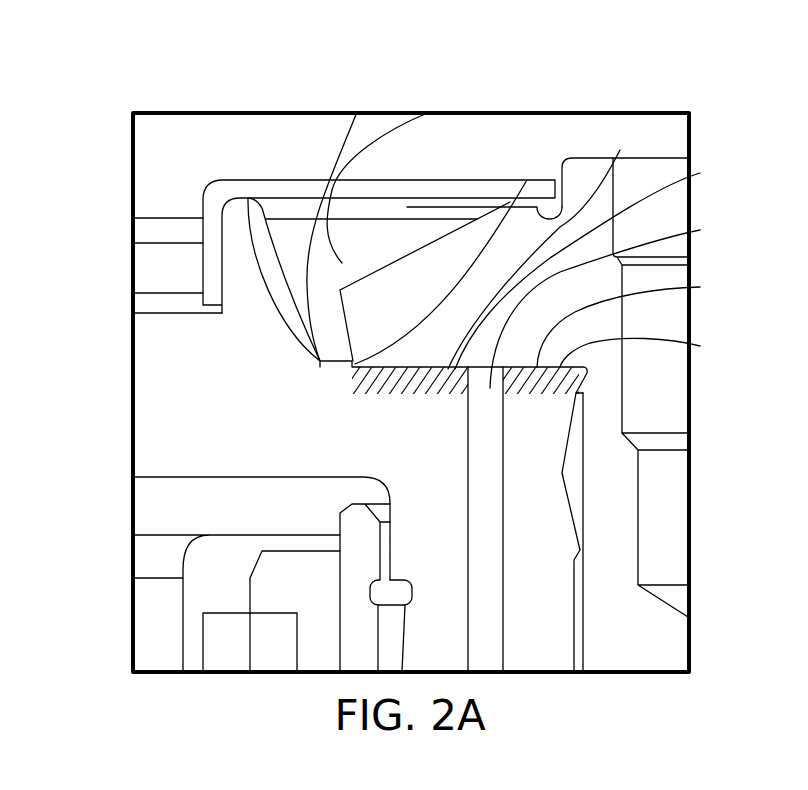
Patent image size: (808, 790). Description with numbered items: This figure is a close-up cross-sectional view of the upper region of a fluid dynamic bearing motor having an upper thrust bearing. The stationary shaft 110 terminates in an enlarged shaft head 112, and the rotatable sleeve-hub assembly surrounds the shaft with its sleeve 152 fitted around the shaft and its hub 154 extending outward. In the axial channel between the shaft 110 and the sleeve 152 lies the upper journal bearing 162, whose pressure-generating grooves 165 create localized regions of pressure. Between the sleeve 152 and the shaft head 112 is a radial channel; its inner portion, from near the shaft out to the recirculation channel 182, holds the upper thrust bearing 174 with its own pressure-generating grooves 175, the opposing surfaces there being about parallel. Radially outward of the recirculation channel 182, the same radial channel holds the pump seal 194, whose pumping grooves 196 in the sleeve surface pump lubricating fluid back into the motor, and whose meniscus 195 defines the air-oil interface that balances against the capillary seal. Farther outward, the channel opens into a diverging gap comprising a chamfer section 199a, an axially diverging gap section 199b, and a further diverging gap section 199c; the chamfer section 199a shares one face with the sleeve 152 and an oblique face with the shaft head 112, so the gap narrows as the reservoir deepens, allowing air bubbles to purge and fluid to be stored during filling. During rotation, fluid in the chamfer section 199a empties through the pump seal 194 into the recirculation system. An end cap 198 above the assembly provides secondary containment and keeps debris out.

The shaft 110 is at (657, 661).
The shaft head 112 is at (410, 318).
The sleeve 152 is at (413, 661).
The hub 154 is at (152, 406).
The upper journal bearing 162 is at (583, 437).
The pressure-generating grooves 165 is at (562, 473).
The upper thrust bearing 174 is at (700, 287).
The pressure-generating grooves 175 is at (700, 346).
The recirculation channel 182 is at (700, 230).
The pump seal 194 is at (620, 150).
The meniscus 195 is at (527, 180).
The pumping grooves 196 is at (700, 173).
The end cap 198 is at (222, 198).
The chamfer section 199a is at (248, 198).
The diverging gap section 199b is at (357, 112).
The diverging gap section 199c is at (430, 112).